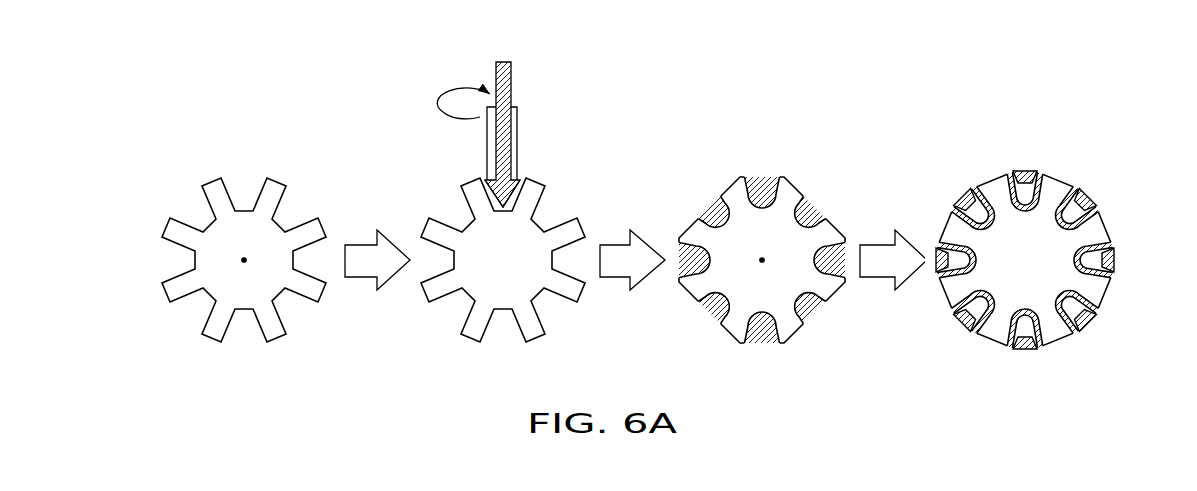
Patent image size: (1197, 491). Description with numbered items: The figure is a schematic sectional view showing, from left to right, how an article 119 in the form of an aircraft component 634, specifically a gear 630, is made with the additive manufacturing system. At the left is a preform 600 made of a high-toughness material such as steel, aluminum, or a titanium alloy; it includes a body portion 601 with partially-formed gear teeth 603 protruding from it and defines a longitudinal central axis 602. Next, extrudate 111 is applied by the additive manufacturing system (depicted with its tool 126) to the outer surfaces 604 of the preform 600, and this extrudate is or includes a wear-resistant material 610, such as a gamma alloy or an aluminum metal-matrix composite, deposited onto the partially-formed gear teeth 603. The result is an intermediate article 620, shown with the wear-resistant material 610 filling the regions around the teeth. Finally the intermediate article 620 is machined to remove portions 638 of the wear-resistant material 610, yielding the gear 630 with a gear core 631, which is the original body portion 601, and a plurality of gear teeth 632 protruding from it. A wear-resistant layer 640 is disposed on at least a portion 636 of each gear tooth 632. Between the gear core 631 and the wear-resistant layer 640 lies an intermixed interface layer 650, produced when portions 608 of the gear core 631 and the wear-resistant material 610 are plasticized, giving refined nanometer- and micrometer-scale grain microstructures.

The preform 600 is at (287, 152).
The body portion 601 is at (215, 233).
The longitudinal central axis 602 is at (244, 260).
The partially-formed gear teeth 603 is at (257, 333).
The outer surfaces 604 is at (513, 333).
The extrudate 111 is at (503, 210).
The cutting tool 126 is at (505, 62).
The wear-resistant material 610 is at (512, 186).
The intermediate article 620 is at (808, 158).
The article 119 is at (1000, 138).
The gear 630 is at (1053, 143).
The gear teeth 632 is at (996, 198).
The aircraft component 634 is at (1078, 173).
The portion of gear tooth 636 is at (962, 215).
The portions of wear-resistant material 638 is at (950, 186).
The wear-resistant layer 640 is at (1093, 204).
The portions of gear core and wear-resistant material 608 is at (1088, 226).
The gear core 631 is at (1063, 275).
The intermixed interface layer 650 is at (950, 293).